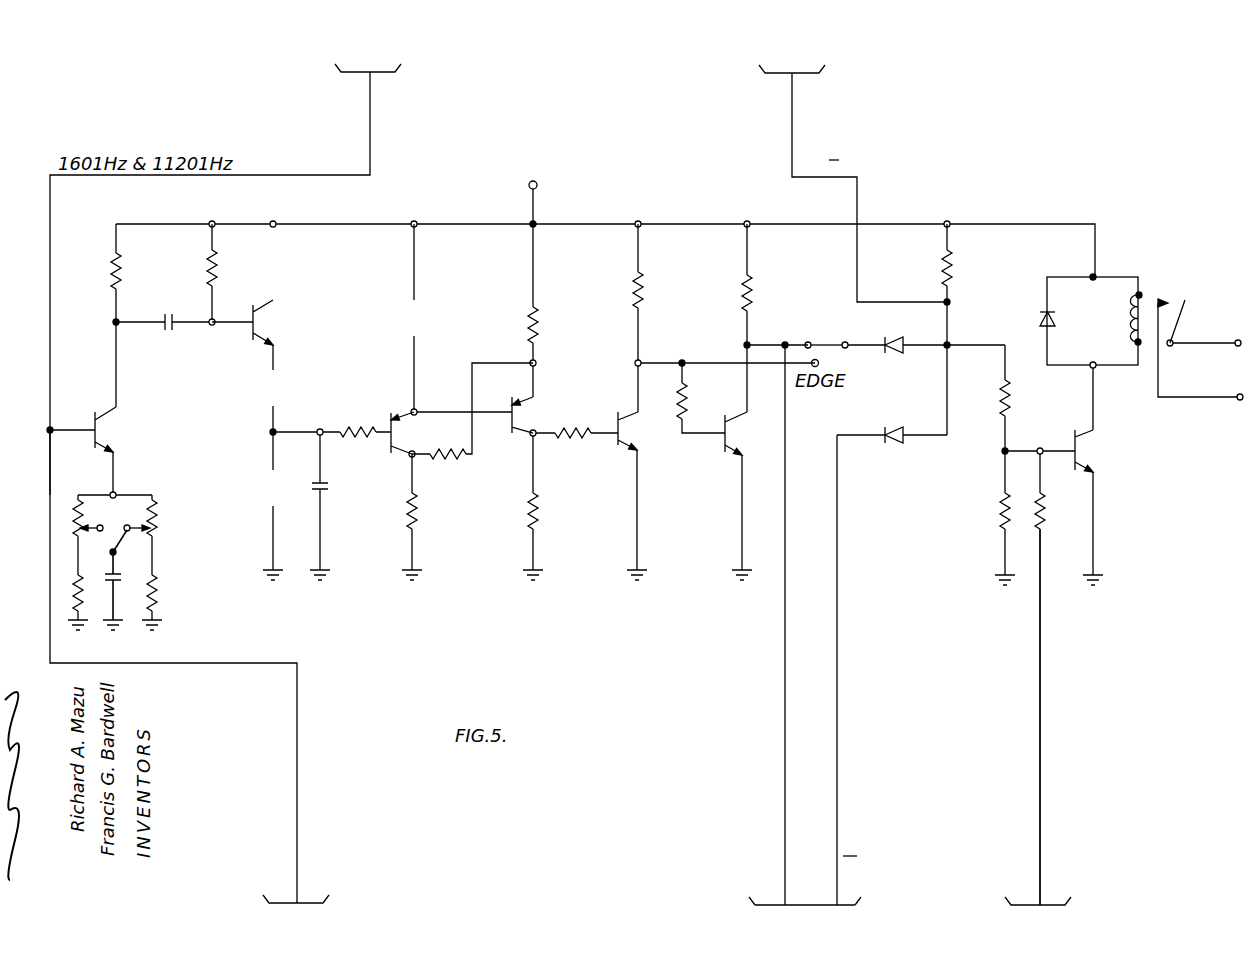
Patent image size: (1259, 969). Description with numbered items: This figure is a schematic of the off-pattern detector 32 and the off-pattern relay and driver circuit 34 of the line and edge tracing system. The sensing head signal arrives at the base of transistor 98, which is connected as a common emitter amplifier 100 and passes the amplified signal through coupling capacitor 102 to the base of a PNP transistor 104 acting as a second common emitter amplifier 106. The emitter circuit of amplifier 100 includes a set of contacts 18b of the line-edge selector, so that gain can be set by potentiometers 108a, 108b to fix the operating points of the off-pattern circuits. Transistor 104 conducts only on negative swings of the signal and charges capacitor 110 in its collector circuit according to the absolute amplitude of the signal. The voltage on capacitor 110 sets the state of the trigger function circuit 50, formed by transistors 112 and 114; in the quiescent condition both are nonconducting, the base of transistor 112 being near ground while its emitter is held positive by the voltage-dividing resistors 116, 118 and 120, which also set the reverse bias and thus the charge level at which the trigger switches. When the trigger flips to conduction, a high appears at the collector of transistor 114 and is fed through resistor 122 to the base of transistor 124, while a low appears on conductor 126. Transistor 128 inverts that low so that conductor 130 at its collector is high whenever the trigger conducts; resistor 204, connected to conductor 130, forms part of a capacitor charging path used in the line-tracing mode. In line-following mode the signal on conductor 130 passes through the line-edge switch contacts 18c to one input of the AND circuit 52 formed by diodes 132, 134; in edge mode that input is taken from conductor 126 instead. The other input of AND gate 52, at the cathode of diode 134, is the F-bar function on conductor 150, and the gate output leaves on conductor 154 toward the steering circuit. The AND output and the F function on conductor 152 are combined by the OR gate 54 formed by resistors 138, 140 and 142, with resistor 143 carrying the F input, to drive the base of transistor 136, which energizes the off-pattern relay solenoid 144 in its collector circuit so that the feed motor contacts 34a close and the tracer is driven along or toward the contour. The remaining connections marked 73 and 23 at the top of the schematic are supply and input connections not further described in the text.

The frequency input line 73 is at (371, 127).
The positive supply terminal 23 is at (554, 183).
The conductor 154 is at (858, 205).
The common emitter amplifier 100 is at (105, 396).
The coupling capacitor 102 is at (170, 312).
The PNP transistor 104 is at (253, 306).
The common emitter amplifier 106 is at (279, 326).
The transistor 98 is at (93, 414).
The potentiometer 108b is at (76, 528).
The potentiometer 108a is at (155, 528).
The set of contacts 18b is at (115, 549).
The off-pattern detector 32 is at (130, 605).
The capacitor 110 is at (328, 485).
The transistor 112 is at (391, 411).
The resistor 118 is at (443, 458).
The resistor 120 is at (410, 505).
The resistor 116 is at (533, 325).
The PNP transistor 114 is at (512, 399).
The resistor 122 is at (589, 425).
The transistor 124 is at (614, 442).
The trigger function circuit 50 is at (471, 567).
The conductor 126 is at (642, 363).
The transistor 128 is at (712, 419).
The resistor 204 is at (751, 284).
The conductor 130 is at (747, 345).
The line-edge switch contacts 18c is at (843, 343).
The diode 132 is at (890, 337).
The diode 134 is at (885, 428).
The conductor 150 is at (833, 697).
The AND circuit 52 is at (877, 470).
The resistor 138 is at (948, 268).
The resistor 140 is at (984, 398).
The resistor 142 is at (1003, 505).
The resistor 143 is at (1041, 506).
The conductor 152 is at (1038, 697).
The transistor 136 is at (1084, 406).
The OR gate 54 is at (1025, 414).
The off-pattern relay and driver circuit 34 is at (1106, 478).
The off-pattern relay solenoid 144 is at (1141, 296).
The feed motor contacts 34a is at (1182, 313).